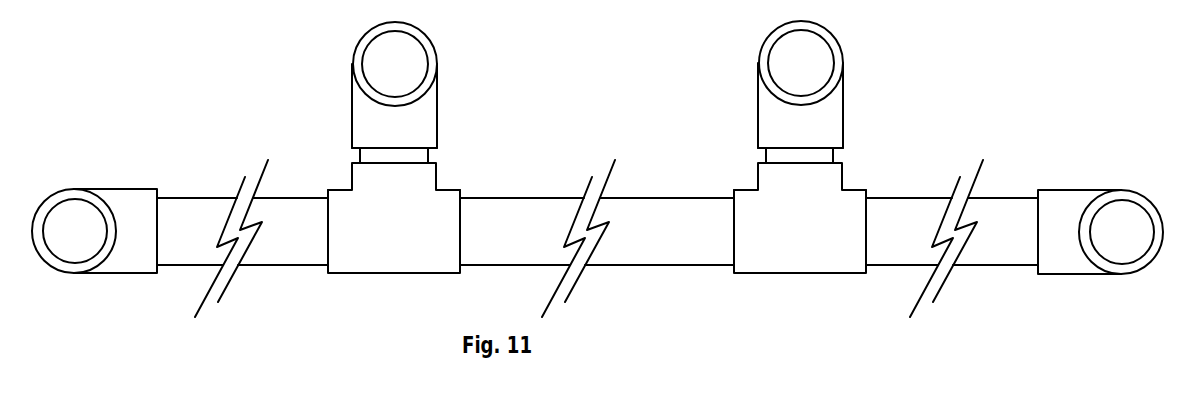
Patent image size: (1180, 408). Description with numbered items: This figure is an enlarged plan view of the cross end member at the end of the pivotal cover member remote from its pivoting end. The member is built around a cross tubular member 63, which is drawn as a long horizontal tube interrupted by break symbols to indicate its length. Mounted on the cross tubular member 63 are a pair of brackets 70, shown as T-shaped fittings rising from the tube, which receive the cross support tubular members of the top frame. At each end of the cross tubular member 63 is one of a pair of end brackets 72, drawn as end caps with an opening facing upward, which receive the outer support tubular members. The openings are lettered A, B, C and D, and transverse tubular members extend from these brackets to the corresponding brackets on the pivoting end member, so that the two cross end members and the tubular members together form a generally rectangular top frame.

The cross tubular member 63 is at (537, 200).
The brackets 70 is at (436, 172).
The end brackets 72 is at (117, 190).